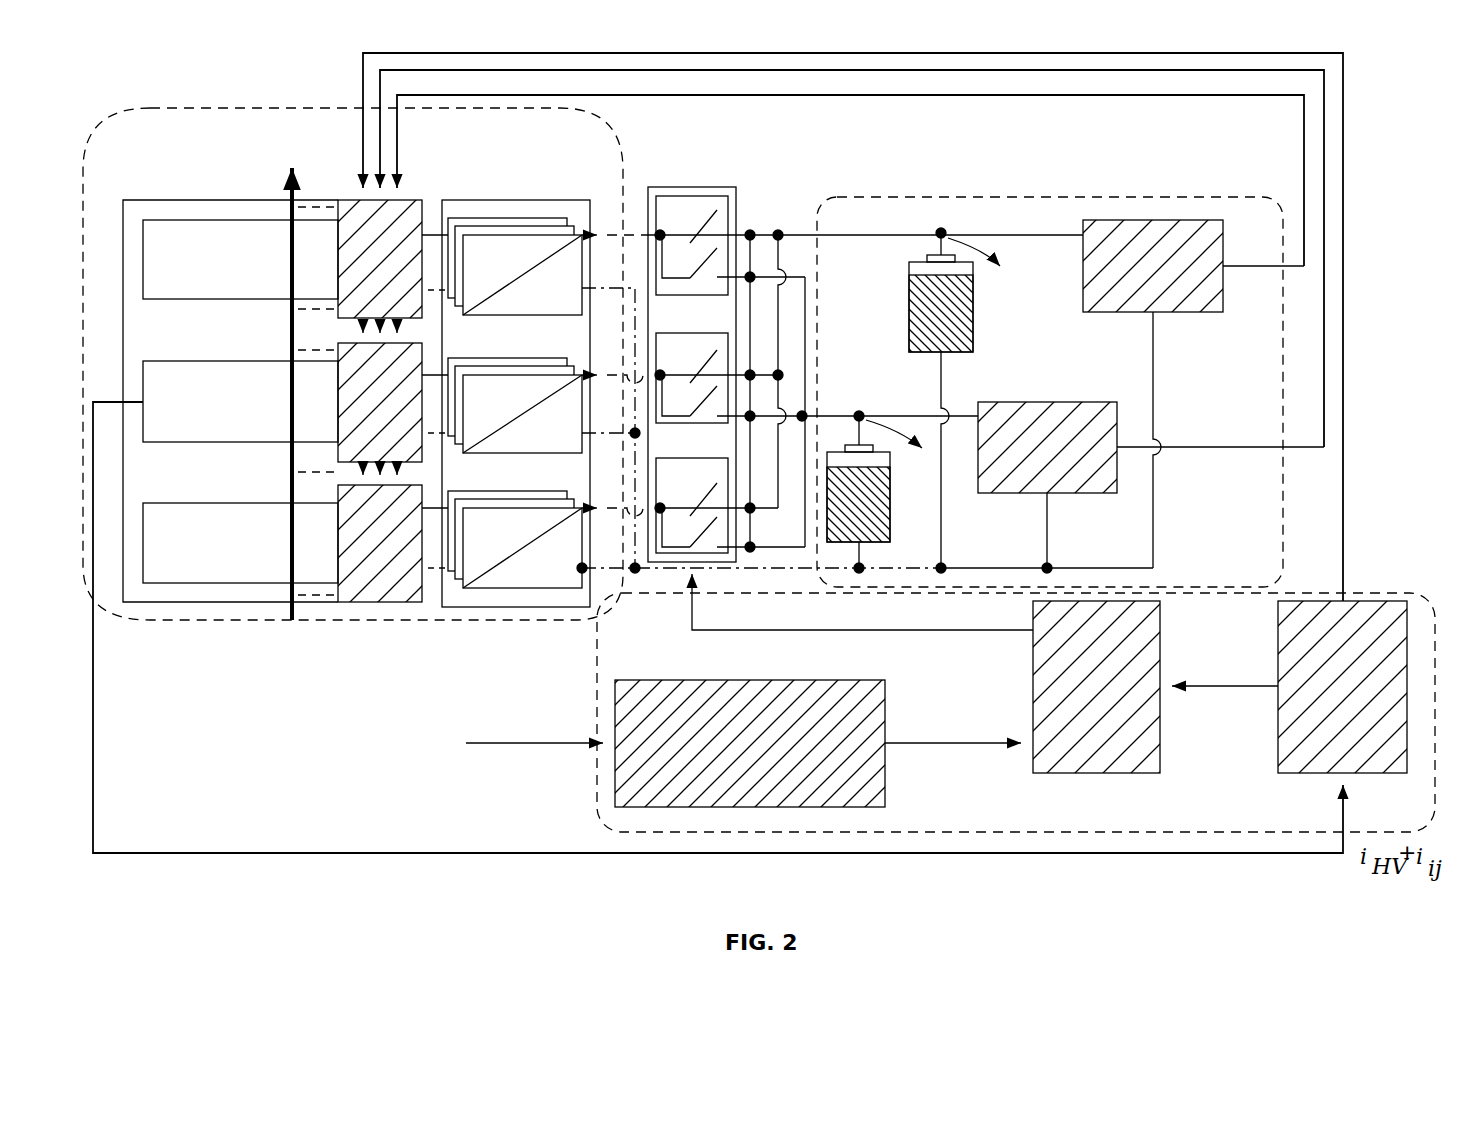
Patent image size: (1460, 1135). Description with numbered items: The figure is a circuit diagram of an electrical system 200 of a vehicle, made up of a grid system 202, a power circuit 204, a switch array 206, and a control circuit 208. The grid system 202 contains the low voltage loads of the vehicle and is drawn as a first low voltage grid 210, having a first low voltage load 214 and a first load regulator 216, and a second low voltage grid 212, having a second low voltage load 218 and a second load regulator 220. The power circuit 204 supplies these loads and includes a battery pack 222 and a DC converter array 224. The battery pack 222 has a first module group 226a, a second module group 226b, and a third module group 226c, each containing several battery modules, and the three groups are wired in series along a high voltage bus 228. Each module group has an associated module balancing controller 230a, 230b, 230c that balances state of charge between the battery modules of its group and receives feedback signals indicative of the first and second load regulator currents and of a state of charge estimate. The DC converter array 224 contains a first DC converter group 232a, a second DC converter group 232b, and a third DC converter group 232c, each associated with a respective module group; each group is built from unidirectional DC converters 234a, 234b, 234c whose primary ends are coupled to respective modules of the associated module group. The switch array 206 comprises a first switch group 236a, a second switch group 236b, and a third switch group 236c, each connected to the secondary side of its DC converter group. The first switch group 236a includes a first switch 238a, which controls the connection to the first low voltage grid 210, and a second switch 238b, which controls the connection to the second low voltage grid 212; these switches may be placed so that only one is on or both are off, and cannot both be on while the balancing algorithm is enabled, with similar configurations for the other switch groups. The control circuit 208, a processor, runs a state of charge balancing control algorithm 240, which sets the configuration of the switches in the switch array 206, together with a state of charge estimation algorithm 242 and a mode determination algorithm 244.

The electrical system 200 is at (1375, 84).
The grid system 202 is at (1285, 340).
The power circuit 204 is at (180, 108).
The switch array 206 is at (738, 190).
The control circuit 208 is at (1282, 833).
The first low voltage grid 210 is at (893, 232).
The second low voltage grid 212 is at (842, 404).
The first low voltage load 214 is at (963, 262).
The first load regulator 216 is at (1157, 220).
The second low voltage load 218 is at (903, 406).
The second load regulator 220 is at (1050, 402).
The battery pack 222 is at (245, 190).
The DC converter array 224 is at (445, 200).
The first module group 226a is at (238, 212).
The second module group 226b is at (218, 352).
The third module group 226c is at (218, 494).
The high voltage bus 228 is at (290, 150).
The module balancing controller 230a is at (355, 200).
The module balancing controller 230b is at (422, 344).
The module balancing controller 230c is at (422, 486).
The first DC converter group 232a is at (545, 215).
The second DC converter group 232b is at (558, 350).
The third DC converter group 232c is at (558, 485).
The DC converter 234a is at (465, 217).
The DC converter 234b is at (492, 225).
The DC converter 234c is at (541, 234).
The first switch group 236a is at (730, 214).
The second switch group 236b is at (724, 336).
The third switch group 236c is at (724, 458).
The first switch 238a is at (660, 196).
The second switch 238b is at (730, 242).
The state of charge balancing control algorithm 240 is at (1162, 630).
The state of charge estimation algorithm 242 is at (1278, 672).
The mode determination algorithm 244 is at (745, 680).